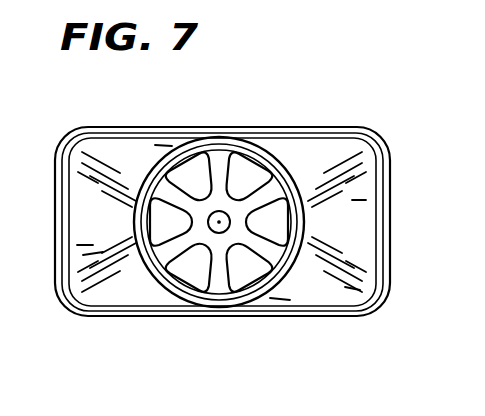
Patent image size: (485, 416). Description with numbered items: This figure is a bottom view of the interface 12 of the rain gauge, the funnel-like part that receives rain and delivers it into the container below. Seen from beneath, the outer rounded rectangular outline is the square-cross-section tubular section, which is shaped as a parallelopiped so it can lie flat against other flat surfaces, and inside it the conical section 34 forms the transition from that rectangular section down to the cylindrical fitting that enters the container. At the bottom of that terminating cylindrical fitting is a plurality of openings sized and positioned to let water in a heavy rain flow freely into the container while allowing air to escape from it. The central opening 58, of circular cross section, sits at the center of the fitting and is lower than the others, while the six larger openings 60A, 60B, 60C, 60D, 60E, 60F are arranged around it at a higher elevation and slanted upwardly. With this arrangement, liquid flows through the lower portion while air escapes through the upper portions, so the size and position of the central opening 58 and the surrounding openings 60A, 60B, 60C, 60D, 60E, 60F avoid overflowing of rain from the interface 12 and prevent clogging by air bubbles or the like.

The interface 12 is at (368, 66).
The conical section 34 is at (330, 210).
The central opening 58 is at (219, 220).
The opening 60A is at (245, 272).
The opening 60B is at (273, 226).
The opening 60C is at (246, 177).
The opening 60D is at (185, 175).
The opening 60E is at (158, 210).
The opening 60F is at (188, 265).